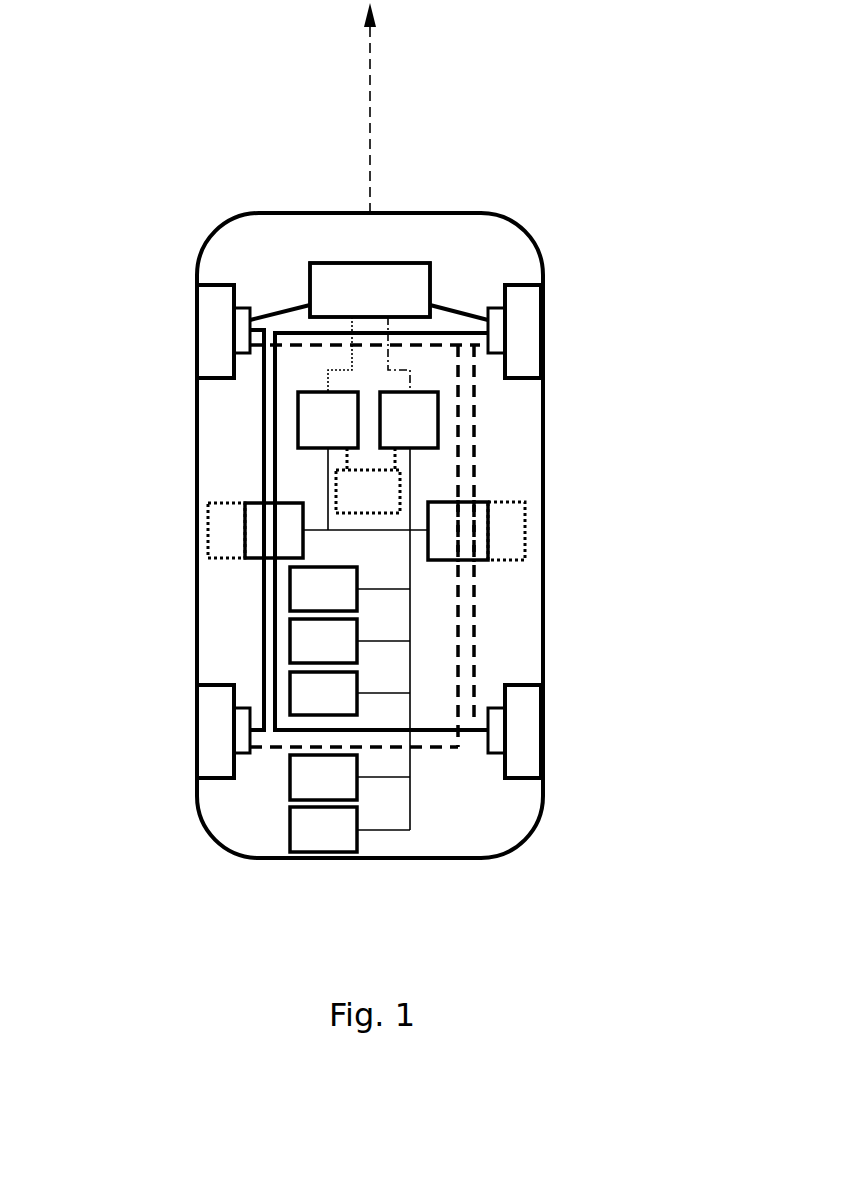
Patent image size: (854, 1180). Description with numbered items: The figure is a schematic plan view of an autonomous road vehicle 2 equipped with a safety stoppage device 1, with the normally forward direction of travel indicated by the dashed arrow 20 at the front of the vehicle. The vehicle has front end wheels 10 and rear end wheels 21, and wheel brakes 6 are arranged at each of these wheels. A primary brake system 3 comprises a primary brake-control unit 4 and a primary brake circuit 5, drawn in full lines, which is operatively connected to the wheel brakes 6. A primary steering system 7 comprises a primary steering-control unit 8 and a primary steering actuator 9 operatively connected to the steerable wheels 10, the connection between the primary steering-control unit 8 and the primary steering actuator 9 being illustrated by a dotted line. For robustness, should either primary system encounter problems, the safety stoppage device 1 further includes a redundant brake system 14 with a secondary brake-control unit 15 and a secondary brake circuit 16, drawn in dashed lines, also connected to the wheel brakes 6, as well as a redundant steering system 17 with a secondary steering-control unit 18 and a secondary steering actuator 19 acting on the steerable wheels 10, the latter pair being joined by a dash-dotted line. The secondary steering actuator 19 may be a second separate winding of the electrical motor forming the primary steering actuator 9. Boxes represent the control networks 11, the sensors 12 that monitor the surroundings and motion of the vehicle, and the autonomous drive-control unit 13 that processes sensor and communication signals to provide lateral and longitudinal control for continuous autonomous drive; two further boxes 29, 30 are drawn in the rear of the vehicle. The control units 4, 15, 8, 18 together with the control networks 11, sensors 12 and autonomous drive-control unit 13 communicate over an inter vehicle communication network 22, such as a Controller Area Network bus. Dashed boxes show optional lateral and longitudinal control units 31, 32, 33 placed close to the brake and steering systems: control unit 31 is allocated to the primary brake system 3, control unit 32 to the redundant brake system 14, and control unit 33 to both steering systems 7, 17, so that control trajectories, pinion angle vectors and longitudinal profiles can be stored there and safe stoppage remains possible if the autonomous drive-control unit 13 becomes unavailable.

The safety stoppage device 1 is at (521, 432).
The autonomous road vehicle 2 is at (531, 235).
The primary brake system 3 is at (197, 517).
The primary brake-control unit 4 is at (230, 490).
The primary brake circuit 5 is at (264, 628).
The wheel brakes 6 is at (243, 318).
The primary steering system 7 is at (290, 375).
The primary steering-control unit 8 is at (328, 382).
The primary steering actuator 9 is at (369, 291).
The front end wheels 10 is at (215, 340).
The control networks 11 is at (350, 589).
The sensors 12 is at (350, 641).
The autonomous drive-control unit 13 is at (350, 693).
The redundant brake system 14 is at (506, 487).
The secondary brake-control unit 15 is at (458, 531).
The secondary brake circuit 16 is at (490, 630).
The redundant steering system 17 is at (443, 377).
The secondary steering-control unit 18 is at (409, 382).
The secondary steering actuator 19 is at (370, 290).
The dashed arrow 20 is at (370, 82).
The rear end wheels 21 is at (213, 740).
The inter vehicle communication network 22 is at (333, 498).
The vehicle device 29 is at (350, 777).
The vehicle device 30 is at (350, 829).
The optional lateral and longitudinal control unit 31 is at (222, 530).
The optional lateral and longitudinal control unit 32 is at (505, 535).
The optional lateral and longitudinal control unit 33 is at (368, 480).